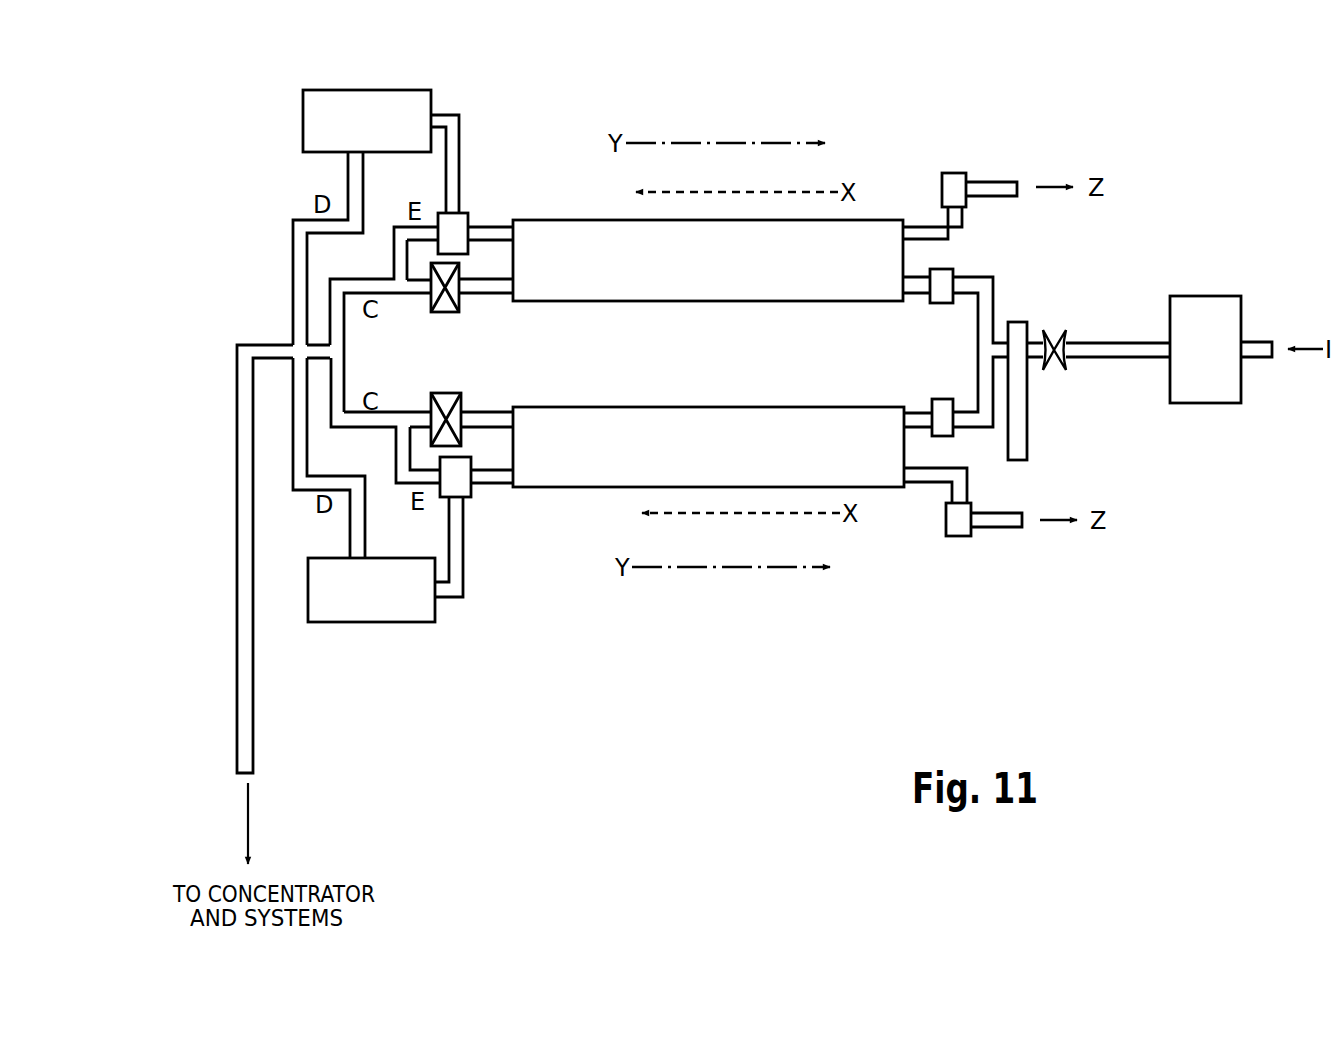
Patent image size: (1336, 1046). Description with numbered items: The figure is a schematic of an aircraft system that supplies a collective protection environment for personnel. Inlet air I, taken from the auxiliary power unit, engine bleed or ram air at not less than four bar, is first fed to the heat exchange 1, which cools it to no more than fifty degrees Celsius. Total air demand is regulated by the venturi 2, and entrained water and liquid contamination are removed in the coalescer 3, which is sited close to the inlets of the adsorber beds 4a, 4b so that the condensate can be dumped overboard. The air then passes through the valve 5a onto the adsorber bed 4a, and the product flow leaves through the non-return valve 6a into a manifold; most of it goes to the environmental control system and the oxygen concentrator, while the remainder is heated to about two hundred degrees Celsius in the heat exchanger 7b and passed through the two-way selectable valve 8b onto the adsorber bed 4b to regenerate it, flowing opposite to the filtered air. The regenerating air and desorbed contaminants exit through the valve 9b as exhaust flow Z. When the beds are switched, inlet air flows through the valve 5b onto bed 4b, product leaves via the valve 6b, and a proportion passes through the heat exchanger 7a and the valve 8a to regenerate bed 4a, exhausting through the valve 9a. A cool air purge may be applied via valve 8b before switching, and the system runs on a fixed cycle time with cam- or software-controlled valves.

The heat exchange 1 is at (1213, 362).
The venturi 2 is at (1072, 330).
The coalescer 3 is at (1023, 322).
The adsorber bed 4a is at (877, 274).
The adsorber bed 4b is at (883, 459).
The valve 5a is at (953, 269).
The valve 5b is at (942, 399).
The non-return valve 6a is at (457, 312).
The valve 6b is at (461, 402).
The heat exchanger 7a is at (367, 121).
The heat exchanger 7b is at (371, 590).
The valve 8a is at (468, 218).
The valve 8b is at (472, 492).
The valve 9a is at (966, 172).
The valve 9b is at (967, 537).